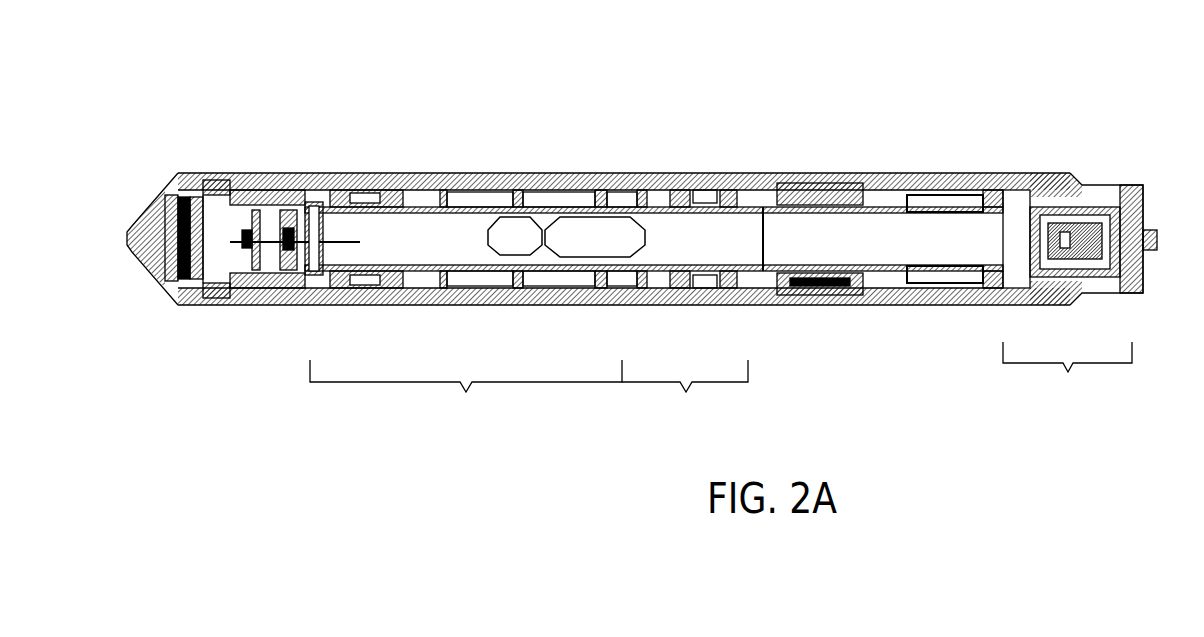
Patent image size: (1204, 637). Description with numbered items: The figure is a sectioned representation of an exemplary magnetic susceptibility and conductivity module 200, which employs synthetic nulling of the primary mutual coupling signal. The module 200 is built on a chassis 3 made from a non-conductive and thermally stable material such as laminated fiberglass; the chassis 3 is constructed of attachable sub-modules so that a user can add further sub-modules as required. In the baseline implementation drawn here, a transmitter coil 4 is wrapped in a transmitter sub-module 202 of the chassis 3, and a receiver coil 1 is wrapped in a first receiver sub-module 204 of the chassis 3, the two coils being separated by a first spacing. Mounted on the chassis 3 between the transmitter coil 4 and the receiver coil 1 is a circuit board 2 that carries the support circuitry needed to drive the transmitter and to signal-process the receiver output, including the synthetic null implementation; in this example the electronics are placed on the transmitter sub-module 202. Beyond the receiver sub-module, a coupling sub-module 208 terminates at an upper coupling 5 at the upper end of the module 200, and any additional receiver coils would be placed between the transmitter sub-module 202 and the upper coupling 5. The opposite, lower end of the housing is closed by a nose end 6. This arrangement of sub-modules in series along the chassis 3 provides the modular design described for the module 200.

The receiver coil 1 is at (703, 193).
The circuit board 2 is at (423, 230).
The chassis 3 is at (500, 203).
The transmitter coil 4 is at (368, 189).
The upper coupling 5 is at (1103, 188).
The nose cap 6 is at (172, 182).
The magnetic susceptibility and conductivity module 200 is at (731, 120).
The sub-module TX1 202 is at (466, 393).
The sub-module RX1 204 is at (686, 393).
The coupling sub-module 208 is at (1068, 372).